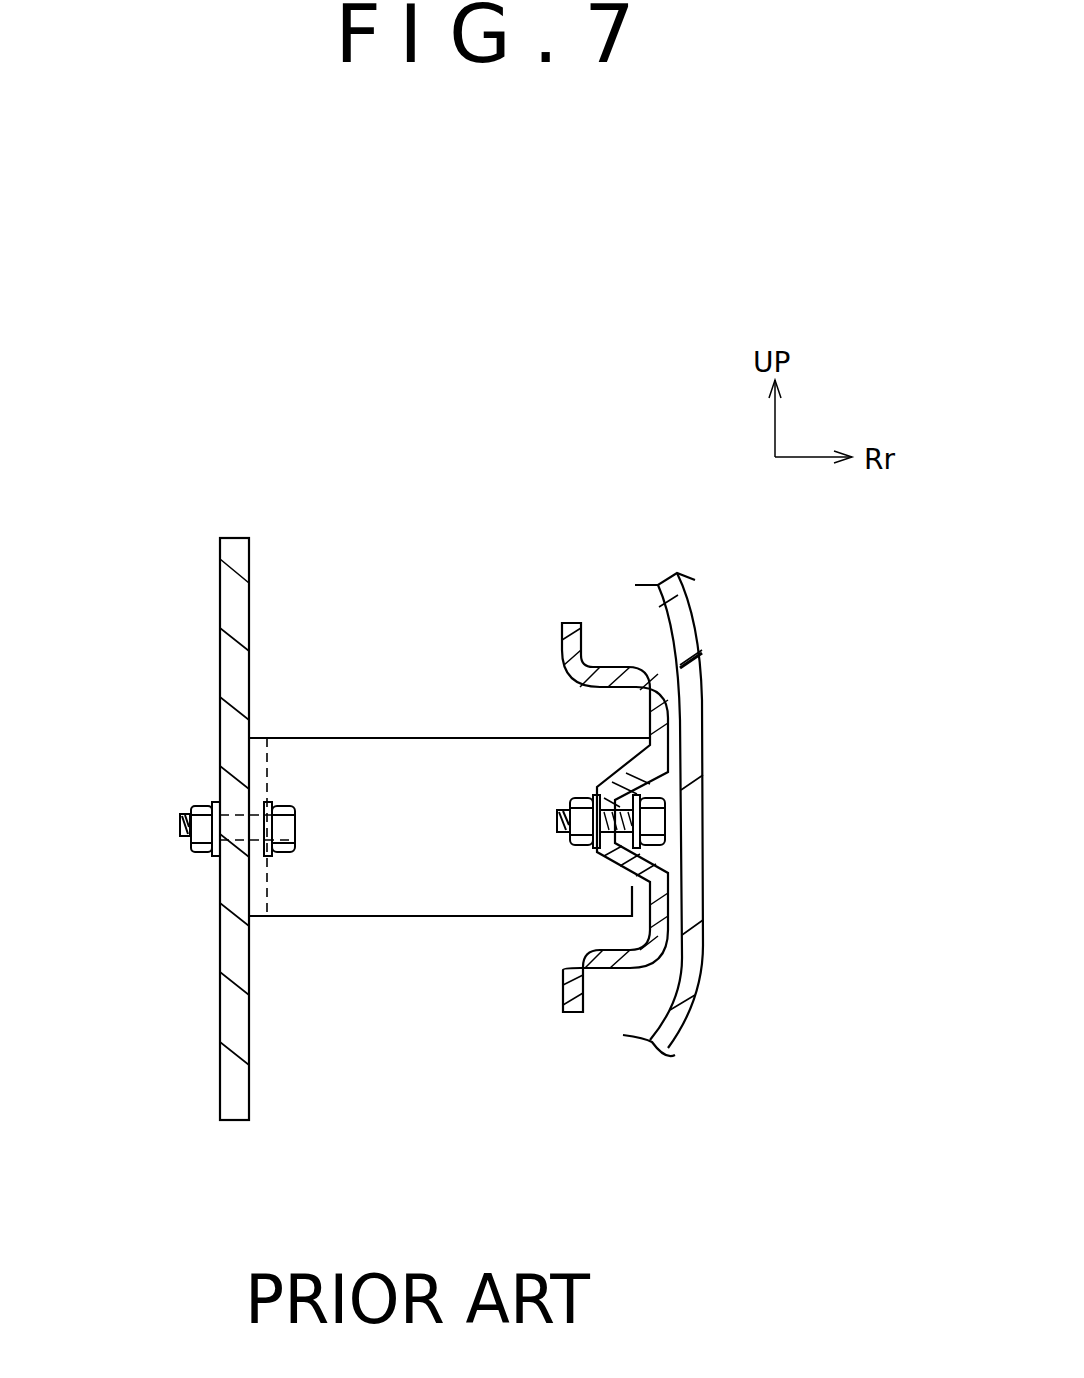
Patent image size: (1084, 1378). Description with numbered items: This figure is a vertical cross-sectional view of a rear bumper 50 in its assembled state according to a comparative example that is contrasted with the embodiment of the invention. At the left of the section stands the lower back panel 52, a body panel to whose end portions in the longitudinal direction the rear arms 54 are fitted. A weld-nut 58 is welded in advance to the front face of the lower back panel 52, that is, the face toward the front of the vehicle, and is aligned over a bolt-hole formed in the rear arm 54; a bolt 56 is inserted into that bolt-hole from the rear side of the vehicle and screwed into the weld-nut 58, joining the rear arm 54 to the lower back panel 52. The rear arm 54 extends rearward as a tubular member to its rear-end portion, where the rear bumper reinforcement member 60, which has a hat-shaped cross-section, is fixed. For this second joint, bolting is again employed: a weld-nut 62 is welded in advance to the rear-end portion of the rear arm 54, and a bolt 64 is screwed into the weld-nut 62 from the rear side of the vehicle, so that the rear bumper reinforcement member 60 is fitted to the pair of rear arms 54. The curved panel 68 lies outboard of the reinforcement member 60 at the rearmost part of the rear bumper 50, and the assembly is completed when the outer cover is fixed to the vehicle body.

The rear bumper 50 is at (776, 895).
The lower back panel 52 is at (215, 1012).
The rear arm 54 is at (400, 918).
The bolt 56 is at (280, 858).
The weld-nut 58 is at (205, 855).
The rear bumper reinforcement member 60 is at (565, 627).
The weld-nut 62 is at (574, 848).
The bolt 64 is at (657, 822).
The rear panel 68 is at (704, 738).